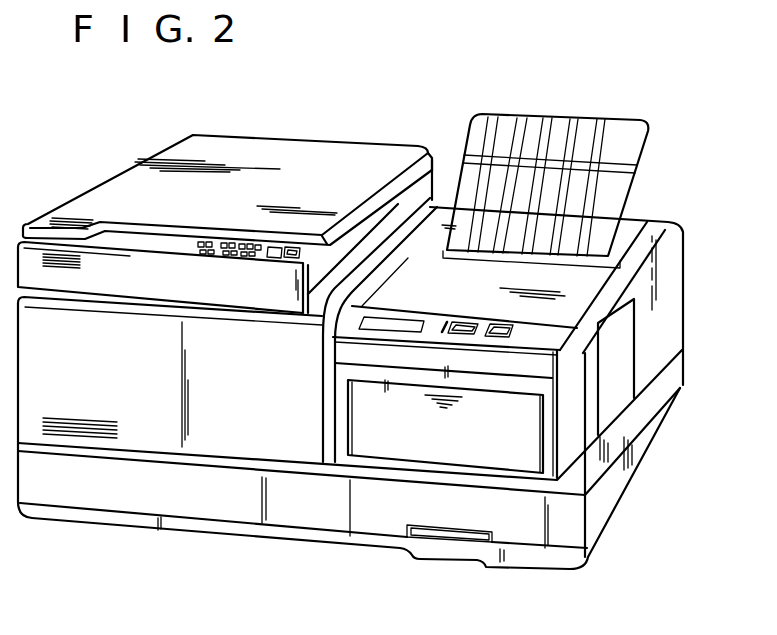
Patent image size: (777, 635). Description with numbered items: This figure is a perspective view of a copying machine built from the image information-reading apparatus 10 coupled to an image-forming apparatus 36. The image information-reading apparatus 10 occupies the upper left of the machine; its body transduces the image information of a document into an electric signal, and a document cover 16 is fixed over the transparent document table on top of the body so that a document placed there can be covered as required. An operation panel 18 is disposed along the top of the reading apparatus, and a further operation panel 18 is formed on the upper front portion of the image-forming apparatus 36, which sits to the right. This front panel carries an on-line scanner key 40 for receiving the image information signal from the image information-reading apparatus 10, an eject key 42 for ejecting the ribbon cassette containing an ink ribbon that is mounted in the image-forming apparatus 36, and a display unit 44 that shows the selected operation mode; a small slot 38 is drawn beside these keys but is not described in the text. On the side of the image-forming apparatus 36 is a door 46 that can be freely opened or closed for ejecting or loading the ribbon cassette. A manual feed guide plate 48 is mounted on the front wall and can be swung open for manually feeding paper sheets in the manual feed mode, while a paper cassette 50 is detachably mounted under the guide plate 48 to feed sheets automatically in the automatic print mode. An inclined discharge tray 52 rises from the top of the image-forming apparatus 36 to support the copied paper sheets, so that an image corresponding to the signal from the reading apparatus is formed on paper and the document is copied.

The image information-reading apparatus 10 is at (298, 134).
The document cover 16 is at (97, 203).
The operation panel 18 is at (176, 249).
The image-forming apparatus 36 is at (687, 297).
The slot 38 is at (447, 320).
The on-line scanner key 40 is at (508, 322).
The eject key 42 is at (472, 322).
The display unit 44 is at (405, 329).
The door 46 is at (617, 398).
The manual feed guide plate 48 is at (370, 415).
The paper cassette 50 is at (398, 508).
The inclined discharge tray 52 is at (537, 114).